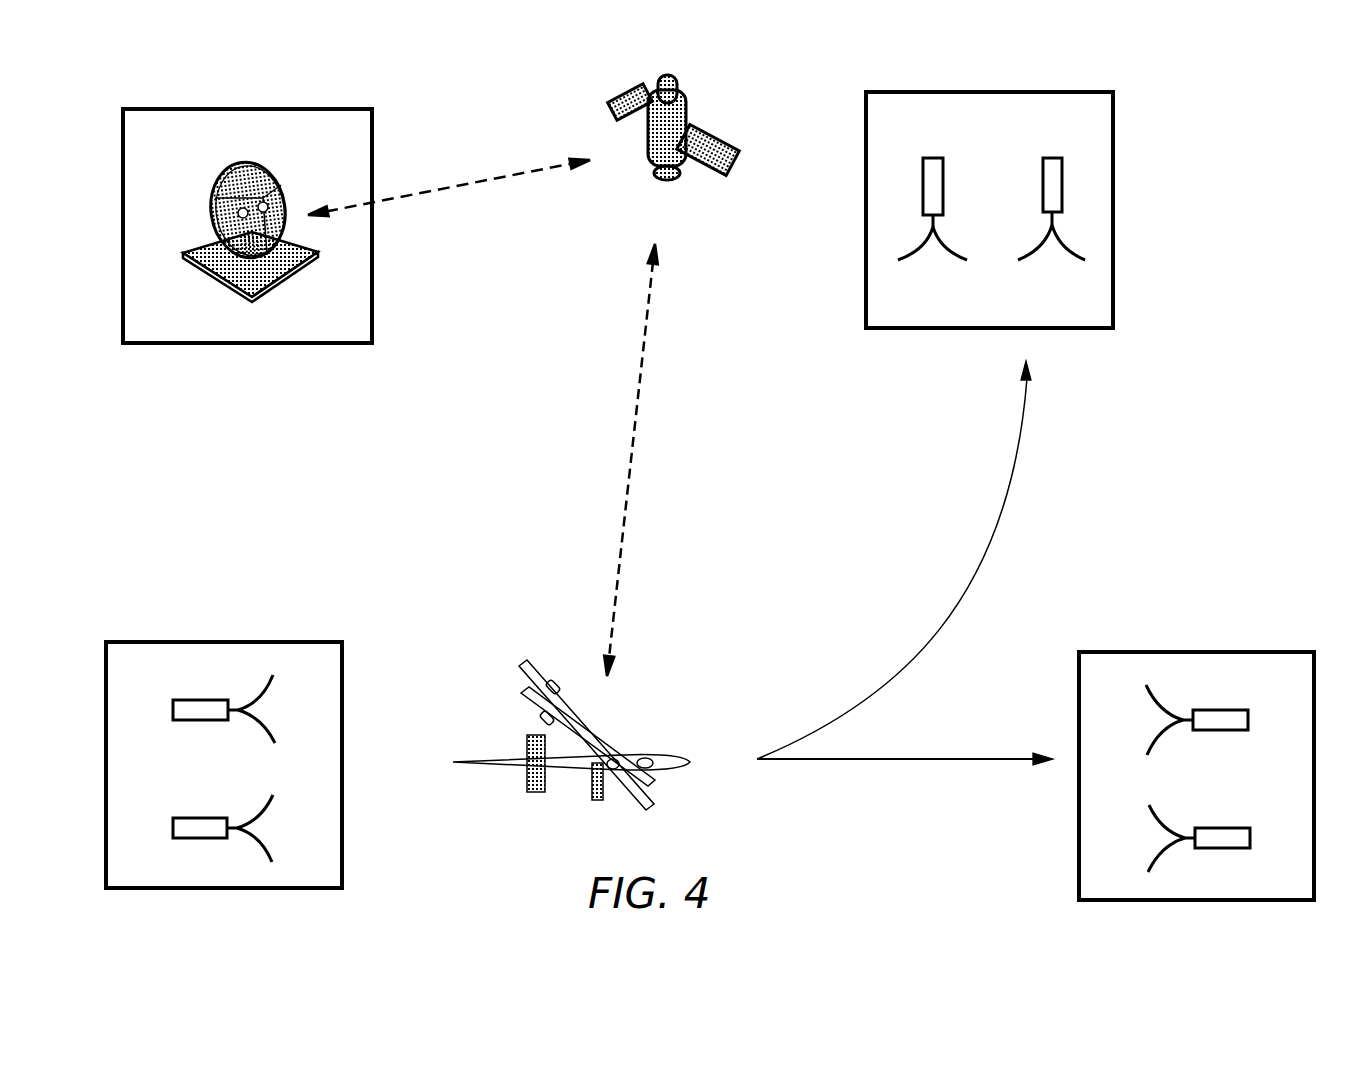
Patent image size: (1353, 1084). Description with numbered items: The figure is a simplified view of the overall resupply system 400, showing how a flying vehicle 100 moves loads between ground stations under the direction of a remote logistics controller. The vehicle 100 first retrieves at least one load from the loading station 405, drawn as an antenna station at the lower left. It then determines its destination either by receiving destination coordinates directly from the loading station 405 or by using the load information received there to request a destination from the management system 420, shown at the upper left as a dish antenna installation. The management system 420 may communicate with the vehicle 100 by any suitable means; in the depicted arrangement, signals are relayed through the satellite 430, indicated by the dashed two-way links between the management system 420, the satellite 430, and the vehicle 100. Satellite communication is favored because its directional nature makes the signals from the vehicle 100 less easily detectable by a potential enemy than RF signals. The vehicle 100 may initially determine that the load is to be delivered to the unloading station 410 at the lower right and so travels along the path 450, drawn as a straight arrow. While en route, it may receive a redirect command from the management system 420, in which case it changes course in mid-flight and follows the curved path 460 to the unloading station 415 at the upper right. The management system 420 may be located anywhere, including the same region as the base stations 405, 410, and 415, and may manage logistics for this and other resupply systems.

The resupply system 400 is at (1239, 158).
The vehicle 100 is at (508, 757).
The loading station 405 is at (287, 638).
The unloading station 410 is at (1202, 648).
The unloading station 415 is at (1115, 288).
The management system 420 is at (285, 345).
The satellite 430 is at (713, 175).
The path 450 is at (921, 761).
The path 460 is at (963, 588).